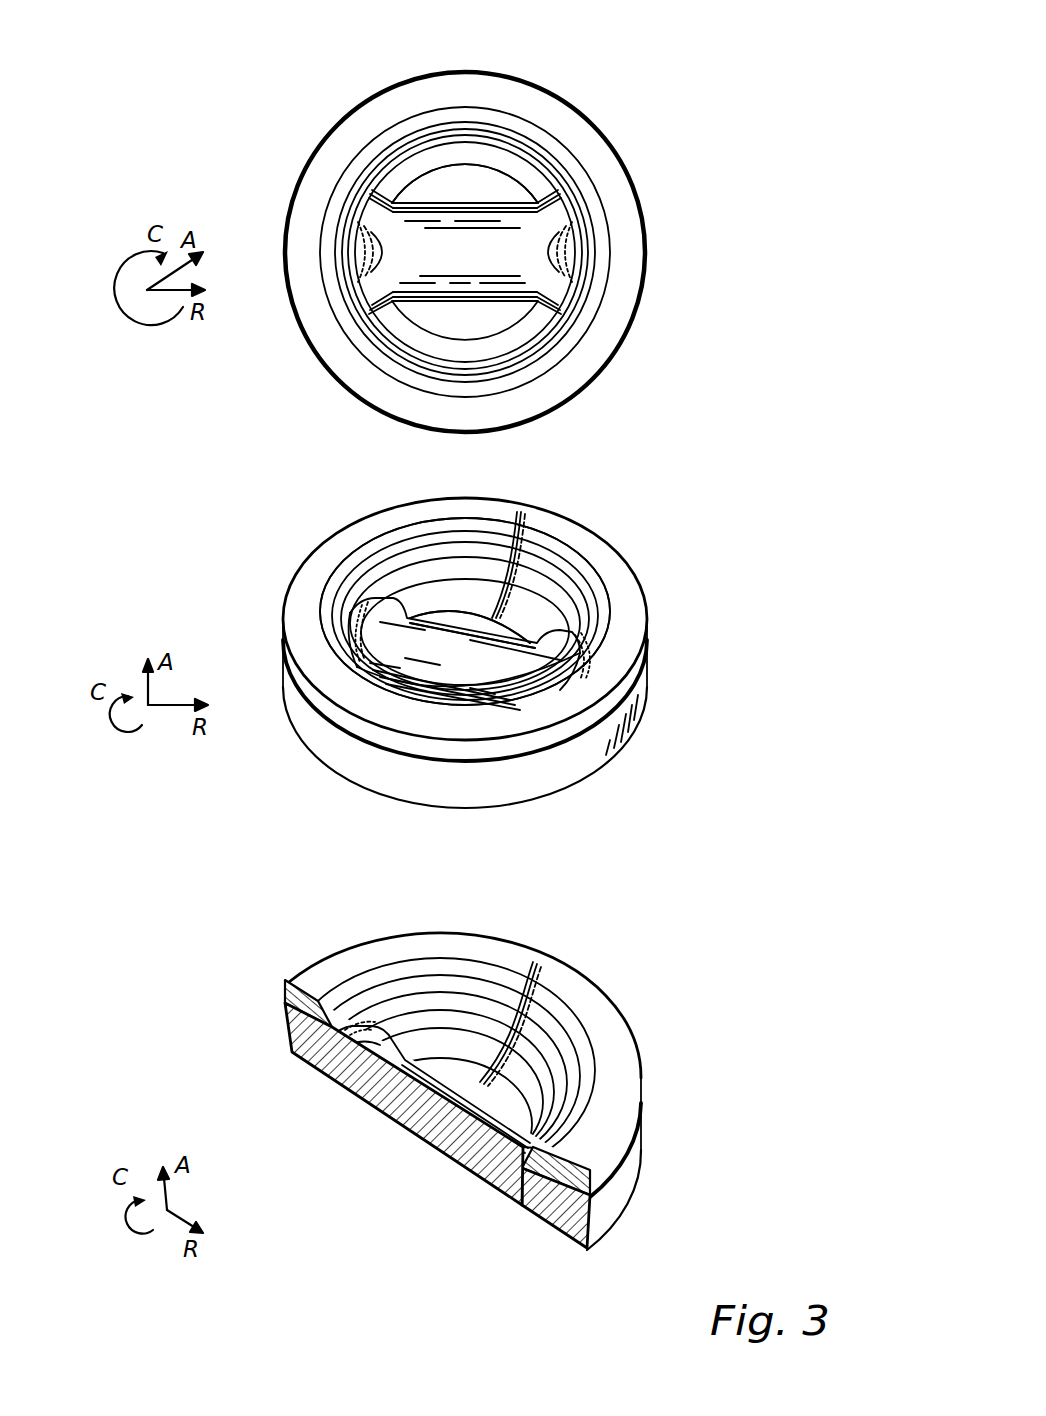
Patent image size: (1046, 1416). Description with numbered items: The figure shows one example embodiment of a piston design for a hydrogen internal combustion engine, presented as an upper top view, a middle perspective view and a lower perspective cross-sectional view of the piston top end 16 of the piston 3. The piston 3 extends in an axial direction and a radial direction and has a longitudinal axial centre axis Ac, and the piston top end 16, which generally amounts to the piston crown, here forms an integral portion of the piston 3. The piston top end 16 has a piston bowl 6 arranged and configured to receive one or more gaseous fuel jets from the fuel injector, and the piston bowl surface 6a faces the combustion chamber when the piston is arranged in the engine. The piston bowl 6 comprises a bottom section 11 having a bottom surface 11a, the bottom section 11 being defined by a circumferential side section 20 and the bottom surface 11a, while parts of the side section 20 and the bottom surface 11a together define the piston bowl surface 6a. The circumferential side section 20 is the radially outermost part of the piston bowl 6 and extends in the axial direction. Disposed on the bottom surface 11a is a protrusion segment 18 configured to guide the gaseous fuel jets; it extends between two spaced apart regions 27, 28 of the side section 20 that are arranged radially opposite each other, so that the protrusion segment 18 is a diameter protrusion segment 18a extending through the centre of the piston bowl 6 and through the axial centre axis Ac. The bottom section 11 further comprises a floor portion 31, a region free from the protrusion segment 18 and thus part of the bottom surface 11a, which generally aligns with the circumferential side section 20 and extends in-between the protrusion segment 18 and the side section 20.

The piston 3 is at (419, 641).
The piston bowl 6 is at (407, 567).
The piston bowl surface 6a is at (465, 611).
The bottom section 11 is at (467, 177).
The bottom surface 11a is at (465, 403).
The piston top end 16 is at (543, 767).
The protrusion segment 18 is at (531, 246).
The diameter protrusion segment 18a is at (465, 425).
The circumferential side section 20 is at (486, 553).
The spaced apart region 27 is at (347, 238).
The spaced apart region 28 is at (585, 252).
The floor portion 31 is at (450, 1072).
The axial centre axis Ac is at (467, 250).